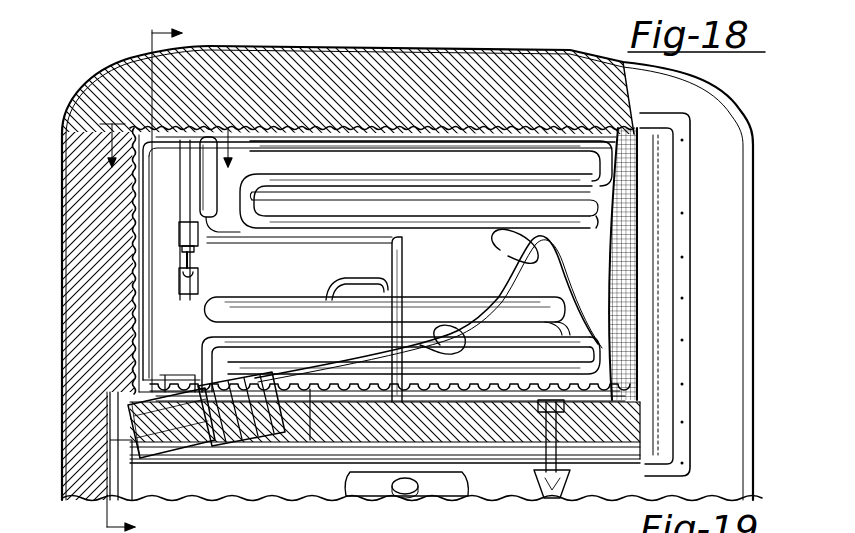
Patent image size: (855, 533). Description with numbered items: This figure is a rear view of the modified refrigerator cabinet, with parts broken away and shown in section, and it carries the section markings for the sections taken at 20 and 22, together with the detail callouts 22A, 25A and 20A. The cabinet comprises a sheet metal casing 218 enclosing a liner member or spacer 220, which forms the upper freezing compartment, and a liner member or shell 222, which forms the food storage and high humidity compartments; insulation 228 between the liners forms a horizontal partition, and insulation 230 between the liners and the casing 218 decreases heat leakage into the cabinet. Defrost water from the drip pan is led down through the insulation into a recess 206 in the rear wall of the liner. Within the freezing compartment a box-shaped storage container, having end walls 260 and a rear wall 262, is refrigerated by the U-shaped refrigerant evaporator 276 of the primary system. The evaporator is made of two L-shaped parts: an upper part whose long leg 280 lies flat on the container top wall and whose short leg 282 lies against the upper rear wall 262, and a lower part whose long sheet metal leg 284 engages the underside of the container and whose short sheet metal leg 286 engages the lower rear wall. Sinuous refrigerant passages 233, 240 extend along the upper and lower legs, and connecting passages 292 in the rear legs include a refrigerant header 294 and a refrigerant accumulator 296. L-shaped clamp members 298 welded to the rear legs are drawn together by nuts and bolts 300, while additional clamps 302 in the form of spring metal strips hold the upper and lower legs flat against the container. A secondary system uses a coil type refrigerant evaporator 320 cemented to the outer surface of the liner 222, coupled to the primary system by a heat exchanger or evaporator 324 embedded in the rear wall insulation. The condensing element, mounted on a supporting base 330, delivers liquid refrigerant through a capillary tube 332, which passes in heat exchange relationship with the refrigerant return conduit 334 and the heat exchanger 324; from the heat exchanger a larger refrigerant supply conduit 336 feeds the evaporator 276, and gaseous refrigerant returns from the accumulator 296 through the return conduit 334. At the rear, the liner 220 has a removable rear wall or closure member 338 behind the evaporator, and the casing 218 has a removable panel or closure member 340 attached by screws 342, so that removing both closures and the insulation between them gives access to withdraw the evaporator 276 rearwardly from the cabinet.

The section line 20- 20 is at (120, 277).
The section line 22- 22 is at (168, 142).
The liner side wall 22A is at (134, 170).
The liner wall 25A is at (142, 176).
The recess 206 is at (538, 486).
The mounting bracket 20A is at (566, 496).
The sheet metal casing 218 is at (62, 217).
The liner member or spacer 220 is at (175, 258).
The liner member or shell 222 is at (270, 412).
The insulation 228 is at (612, 448).
The insulation 230 is at (124, 80).
The sinuous refrigerant passage 233 is at (306, 142).
The sinuous refrigerant passage 240 is at (310, 400).
The end walls 260 is at (134, 236).
The rear wall 262 is at (156, 197).
The refrigerant evaporator 276 is at (142, 346).
The relatively long leg 280 is at (592, 136).
The relatively short leg 282 is at (630, 198).
The relatively long sheet metal leg 284 is at (520, 386).
The relatively short sheet metal leg 286 is at (190, 308).
The connecting passages 292 is at (514, 172).
The refrigerant header 294 is at (426, 172).
The refrigerant accumulator 296 is at (276, 340).
The L-shaped clamp members 298 is at (199, 282).
The nuts and bolts 300 is at (198, 256).
The clamps 302 is at (186, 132).
The refrigerant evaporator 320 is at (330, 458).
The heat exchanger or evaporator 324 is at (210, 446).
The supporting base 330 is at (170, 392).
The capillary tube 332 is at (476, 357).
The refrigerant return conduit 334 is at (392, 308).
The refrigerant supply conduit 336 is at (392, 262).
The removable rear wall or closure member 338 is at (622, 288).
The removable panel or closure member 340 is at (684, 260).
The screws 342 is at (686, 147).